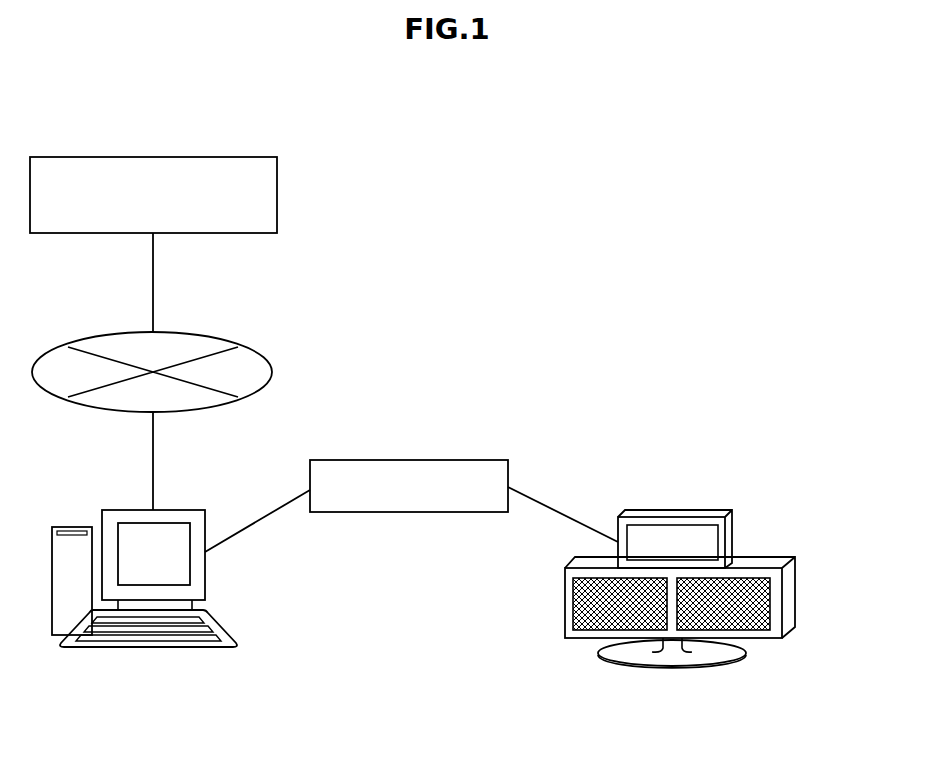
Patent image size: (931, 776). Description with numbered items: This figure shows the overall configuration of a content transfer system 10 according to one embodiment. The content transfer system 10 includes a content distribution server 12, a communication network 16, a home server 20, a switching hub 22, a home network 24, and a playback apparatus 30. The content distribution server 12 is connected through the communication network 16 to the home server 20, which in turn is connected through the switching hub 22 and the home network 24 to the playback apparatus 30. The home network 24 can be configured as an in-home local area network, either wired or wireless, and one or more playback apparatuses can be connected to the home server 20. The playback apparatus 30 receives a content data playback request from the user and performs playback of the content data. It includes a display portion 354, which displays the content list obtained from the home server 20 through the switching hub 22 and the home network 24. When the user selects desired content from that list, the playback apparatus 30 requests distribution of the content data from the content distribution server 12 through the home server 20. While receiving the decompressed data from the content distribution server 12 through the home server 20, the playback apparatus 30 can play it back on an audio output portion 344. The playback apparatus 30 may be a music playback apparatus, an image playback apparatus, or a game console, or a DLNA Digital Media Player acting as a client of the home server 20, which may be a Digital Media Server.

The content transfer system 10 is at (650, 218).
The content distribution server 12 is at (279, 193).
The communication network 16 is at (273, 373).
The home server 20 is at (148, 648).
The switching hub 22 is at (406, 459).
The home network 24 is at (561, 510).
The playback apparatus 30 is at (718, 561).
The audio output portion 344 is at (796, 590).
The display portion 354 is at (705, 545).